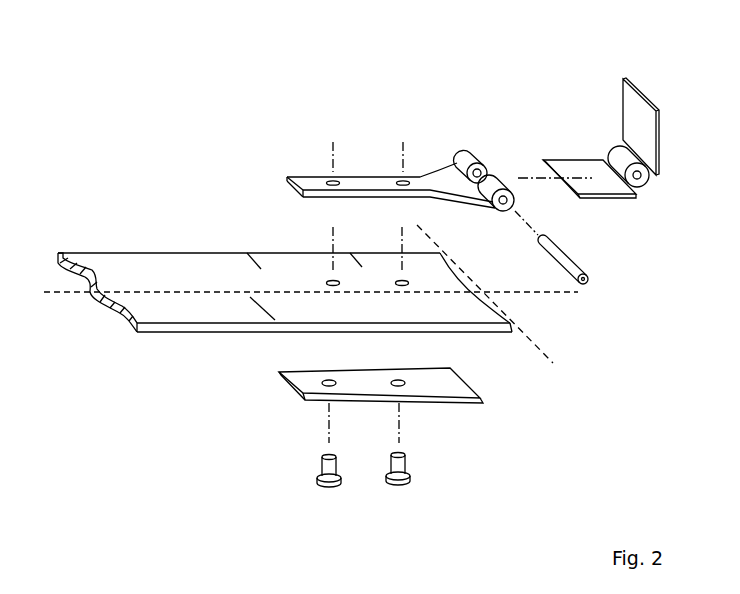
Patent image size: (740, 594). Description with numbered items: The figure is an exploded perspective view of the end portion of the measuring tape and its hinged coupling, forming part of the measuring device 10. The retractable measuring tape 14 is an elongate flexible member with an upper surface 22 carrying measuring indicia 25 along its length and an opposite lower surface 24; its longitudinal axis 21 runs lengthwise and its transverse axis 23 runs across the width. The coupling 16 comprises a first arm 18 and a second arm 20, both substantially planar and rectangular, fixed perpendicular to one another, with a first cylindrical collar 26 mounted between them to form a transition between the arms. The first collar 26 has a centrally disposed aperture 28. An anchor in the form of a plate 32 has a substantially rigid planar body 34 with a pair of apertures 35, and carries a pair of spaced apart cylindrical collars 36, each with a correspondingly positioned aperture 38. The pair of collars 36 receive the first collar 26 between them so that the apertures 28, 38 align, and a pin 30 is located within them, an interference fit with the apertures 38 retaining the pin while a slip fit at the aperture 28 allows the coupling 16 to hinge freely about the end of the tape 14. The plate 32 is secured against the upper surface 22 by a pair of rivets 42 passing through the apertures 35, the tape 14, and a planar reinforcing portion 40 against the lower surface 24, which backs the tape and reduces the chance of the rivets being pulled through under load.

The measuring device 10 is at (234, 102).
The retractable measuring tape 14 is at (200, 245).
The coupling 16 is at (653, 87).
The first arm 18 is at (652, 138).
The second arm 20 is at (600, 193).
The longitudinal axis 21 is at (58, 292).
The upper surface 22 is at (83, 256).
The transverse axis 23 is at (533, 343).
The lower surface 24 is at (168, 335).
The measuring indicia 25 is at (162, 278).
The first cylindrical collar 26 is at (619, 157).
The aperture 28 is at (641, 180).
The pin 30 is at (587, 283).
The plate 32 is at (378, 165).
The planar body 34 is at (317, 182).
The apertures 35 is at (330, 187).
The pair of spaced apart cylindrical collars 36 is at (463, 157).
The aperture 38 is at (483, 168).
The reinforcing portion 40 is at (462, 393).
The rivets 42 is at (320, 463).